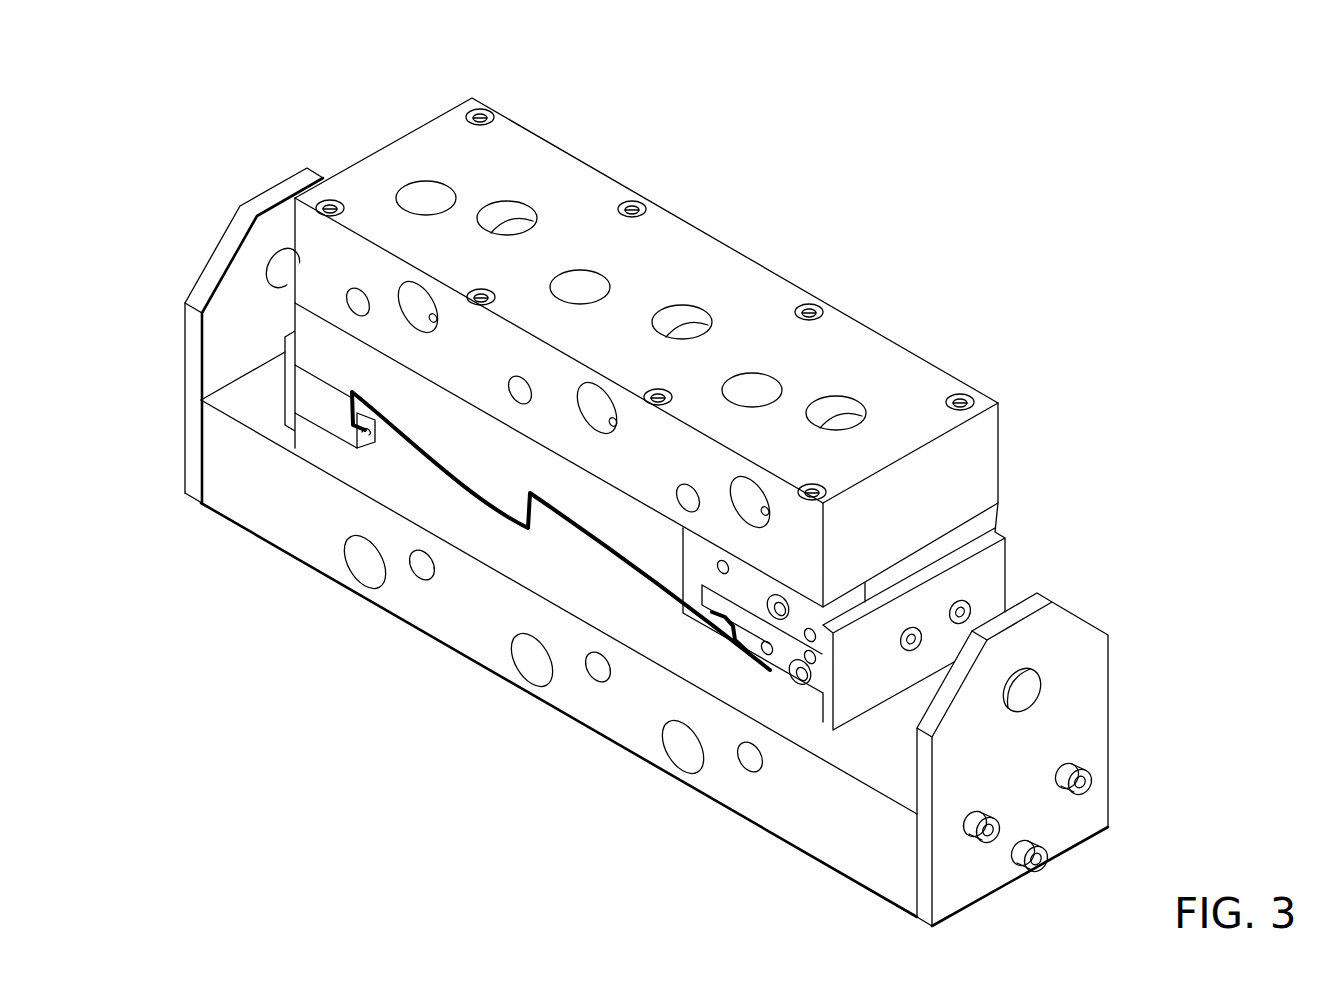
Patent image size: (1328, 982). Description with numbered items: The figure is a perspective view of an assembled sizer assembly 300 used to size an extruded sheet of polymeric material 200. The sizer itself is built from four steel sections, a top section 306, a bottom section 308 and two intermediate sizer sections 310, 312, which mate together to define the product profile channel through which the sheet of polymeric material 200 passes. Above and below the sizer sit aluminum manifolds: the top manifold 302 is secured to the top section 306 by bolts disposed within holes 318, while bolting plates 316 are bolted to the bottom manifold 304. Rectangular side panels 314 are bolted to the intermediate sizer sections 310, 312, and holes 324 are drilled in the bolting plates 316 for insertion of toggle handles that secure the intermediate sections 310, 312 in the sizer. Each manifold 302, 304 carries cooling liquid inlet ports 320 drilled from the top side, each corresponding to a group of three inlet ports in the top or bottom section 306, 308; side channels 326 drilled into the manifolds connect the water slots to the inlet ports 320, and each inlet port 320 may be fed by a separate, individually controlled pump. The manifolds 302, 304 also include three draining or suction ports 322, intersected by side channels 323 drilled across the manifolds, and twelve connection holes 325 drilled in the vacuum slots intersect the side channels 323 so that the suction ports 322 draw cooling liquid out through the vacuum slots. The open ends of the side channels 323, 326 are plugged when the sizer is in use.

The sheet of polymeric material 200 is at (497, 508).
The sizer assembly 300 is at (230, 590).
The top manifold 302 is at (866, 343).
The bottom manifold 304 is at (621, 722).
The top section 306 is at (303, 323).
The bottom section 308 is at (523, 560).
The intermediate sizer section 310 is at (781, 652).
The intermediate sizer section 312 is at (332, 420).
The rectangular side panel 314 is at (286, 402).
The bolting plate 316 is at (271, 188).
The hole 318 is at (491, 114).
The cooling liquid inlet port 320 is at (435, 196).
The suction port 322 is at (512, 215).
The side channel 323 is at (412, 303).
The hole 324 is at (283, 262).
The connection hole 325 is at (435, 319).
The side channel 326 is at (355, 297).